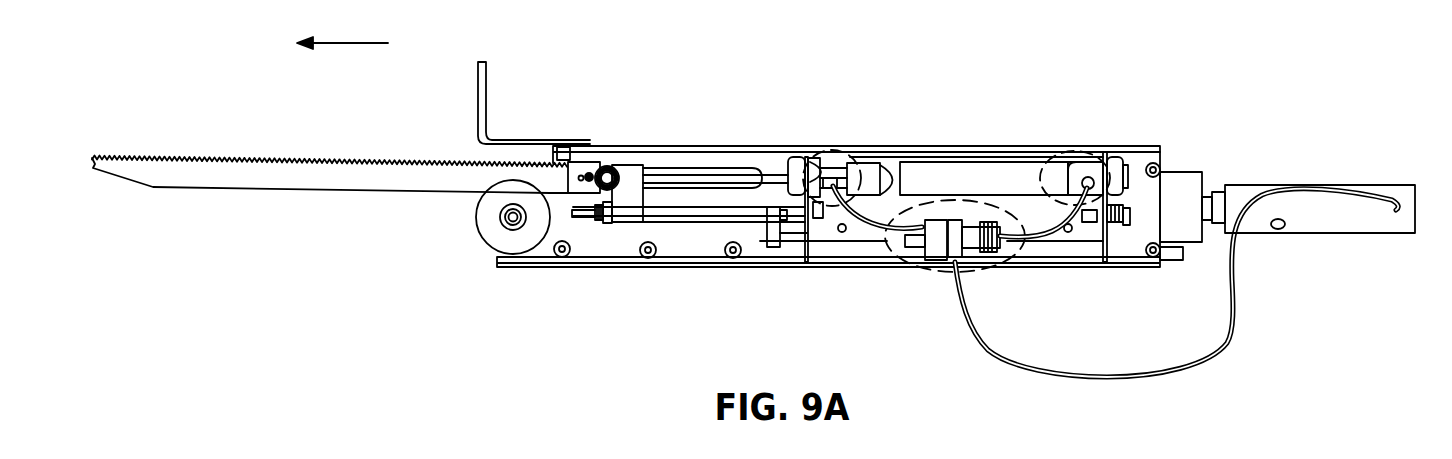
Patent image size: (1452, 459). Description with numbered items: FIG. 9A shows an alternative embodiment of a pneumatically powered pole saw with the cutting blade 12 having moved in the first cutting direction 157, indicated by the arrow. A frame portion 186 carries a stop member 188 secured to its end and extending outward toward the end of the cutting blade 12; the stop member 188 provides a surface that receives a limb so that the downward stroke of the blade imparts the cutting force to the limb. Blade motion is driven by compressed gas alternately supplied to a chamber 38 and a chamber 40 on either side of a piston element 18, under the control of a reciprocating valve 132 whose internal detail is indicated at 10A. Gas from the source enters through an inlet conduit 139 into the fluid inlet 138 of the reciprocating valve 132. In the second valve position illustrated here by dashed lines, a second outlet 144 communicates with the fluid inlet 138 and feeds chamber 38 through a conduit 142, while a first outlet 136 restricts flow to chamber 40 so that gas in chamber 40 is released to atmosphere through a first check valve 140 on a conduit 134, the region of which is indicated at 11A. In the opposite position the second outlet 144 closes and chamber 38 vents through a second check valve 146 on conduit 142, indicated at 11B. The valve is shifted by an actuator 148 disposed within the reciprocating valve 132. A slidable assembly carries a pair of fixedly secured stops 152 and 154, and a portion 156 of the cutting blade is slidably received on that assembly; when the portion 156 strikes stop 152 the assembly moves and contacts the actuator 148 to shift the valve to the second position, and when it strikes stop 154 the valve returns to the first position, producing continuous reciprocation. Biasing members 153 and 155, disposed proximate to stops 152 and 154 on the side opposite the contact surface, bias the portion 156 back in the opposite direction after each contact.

The reciprocating valve detail view 10A is at (931, 289).
The first check valve detail view 11A is at (817, 153).
The second check valve detail view 11B is at (1095, 157).
The cutting blade 12 is at (302, 178).
The piston 18 is at (903, 160).
The chamber 38 is at (880, 163).
The chamber 40 is at (1057, 160).
The reciprocating valve 132 is at (951, 262).
The conduit 134 is at (1072, 263).
The first outlet 136 is at (970, 207).
The fluid inlet 138 is at (963, 267).
The inlet conduit 139 is at (1240, 315).
The first check valve 140 is at (1123, 237).
The conduit 142 is at (860, 263).
The second outlet 144 is at (920, 207).
The second check valve 146 is at (783, 150).
The actuator 148 is at (913, 273).
The stop 152 is at (608, 225).
The biasing member 153 is at (588, 175).
The stop 154 is at (770, 233).
The biasing member 155 is at (790, 230).
The portion of the cutting blade 156 is at (627, 207).
The first cutting direction 157 is at (343, 45).
The frame portion 186 is at (655, 150).
The stop member 188 is at (485, 90).